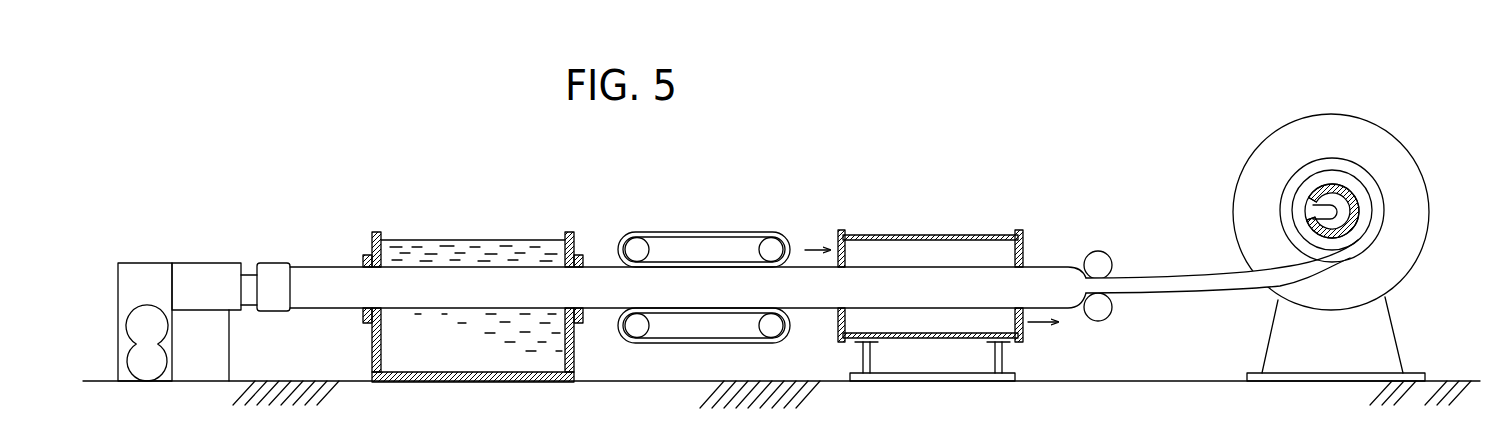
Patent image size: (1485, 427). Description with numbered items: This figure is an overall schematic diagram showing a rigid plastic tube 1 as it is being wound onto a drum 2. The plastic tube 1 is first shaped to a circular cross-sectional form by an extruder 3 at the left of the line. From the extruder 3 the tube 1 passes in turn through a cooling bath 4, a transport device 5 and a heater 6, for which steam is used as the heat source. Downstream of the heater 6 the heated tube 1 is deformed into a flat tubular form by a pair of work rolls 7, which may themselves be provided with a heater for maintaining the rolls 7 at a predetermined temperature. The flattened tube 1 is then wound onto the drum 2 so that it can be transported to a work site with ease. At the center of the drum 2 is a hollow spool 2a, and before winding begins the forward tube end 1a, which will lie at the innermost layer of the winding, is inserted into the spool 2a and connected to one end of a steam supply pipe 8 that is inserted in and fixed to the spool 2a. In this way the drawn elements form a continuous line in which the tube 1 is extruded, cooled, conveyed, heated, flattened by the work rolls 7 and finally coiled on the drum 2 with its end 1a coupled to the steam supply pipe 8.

The rigid plastic tube 1 is at (1377, 222).
The forward tube end 1a is at (1300, 208).
The drum 2 is at (1345, 127).
The hollow spool 2a is at (1352, 190).
The extruder 3 is at (261, 266).
The cooling bath 4 is at (574, 234).
The transport device 5 is at (681, 228).
The heater 6 is at (1023, 231).
The work rolls 7 is at (1099, 251).
The steam supply pipe 8 is at (1327, 210).